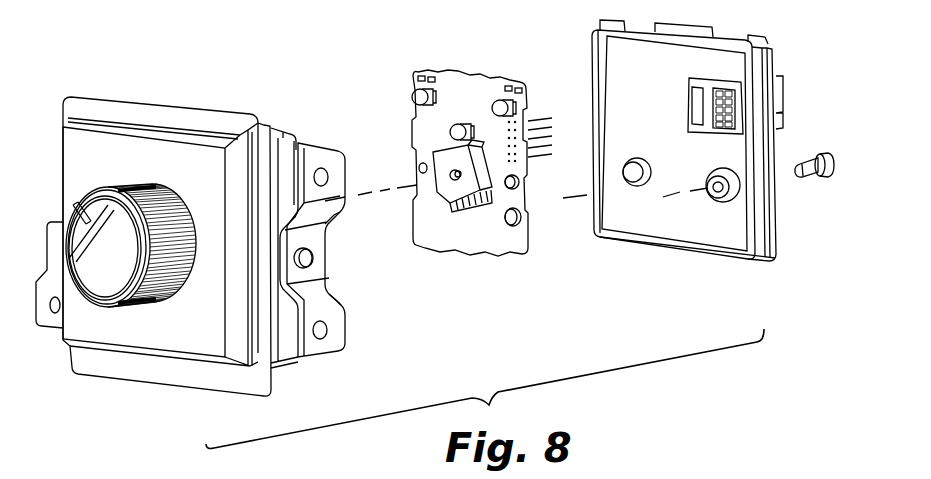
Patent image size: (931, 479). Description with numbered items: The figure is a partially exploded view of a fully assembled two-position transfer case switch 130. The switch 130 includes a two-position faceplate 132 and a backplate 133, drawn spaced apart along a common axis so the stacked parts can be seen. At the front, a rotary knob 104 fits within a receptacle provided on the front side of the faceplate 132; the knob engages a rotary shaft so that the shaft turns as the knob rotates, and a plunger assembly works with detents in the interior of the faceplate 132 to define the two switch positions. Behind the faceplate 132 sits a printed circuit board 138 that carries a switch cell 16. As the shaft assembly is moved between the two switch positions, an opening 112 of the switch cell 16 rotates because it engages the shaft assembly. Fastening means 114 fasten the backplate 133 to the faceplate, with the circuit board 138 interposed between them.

The two-position transfer case switch 130 is at (282, 80).
The two-position faceplate 132 is at (140, 380).
The rotary knob 104 is at (105, 250).
The printed circuit board 138 is at (485, 73).
The switch cell 16 is at (447, 158).
The opening 112 is at (455, 181).
The backplate 133 is at (680, 253).
The fastening means 114 is at (816, 178).